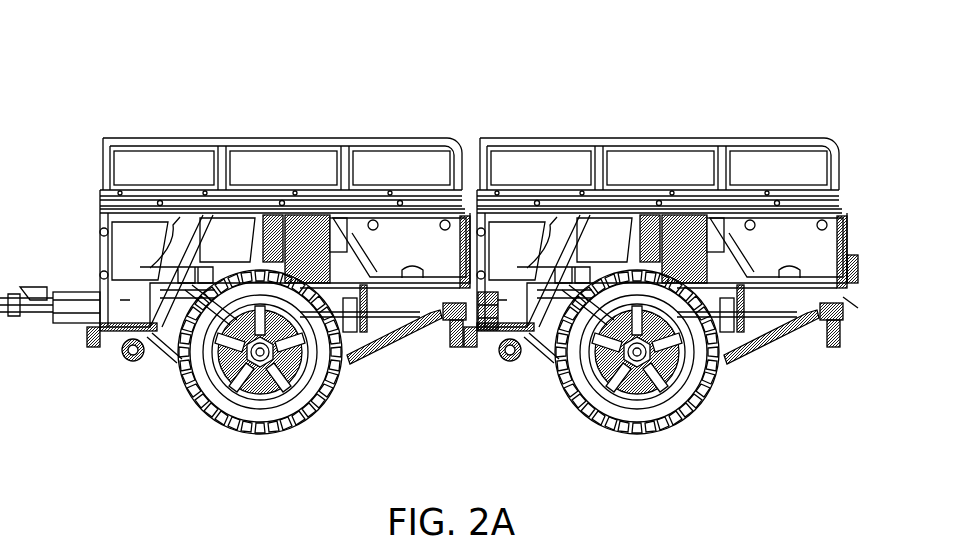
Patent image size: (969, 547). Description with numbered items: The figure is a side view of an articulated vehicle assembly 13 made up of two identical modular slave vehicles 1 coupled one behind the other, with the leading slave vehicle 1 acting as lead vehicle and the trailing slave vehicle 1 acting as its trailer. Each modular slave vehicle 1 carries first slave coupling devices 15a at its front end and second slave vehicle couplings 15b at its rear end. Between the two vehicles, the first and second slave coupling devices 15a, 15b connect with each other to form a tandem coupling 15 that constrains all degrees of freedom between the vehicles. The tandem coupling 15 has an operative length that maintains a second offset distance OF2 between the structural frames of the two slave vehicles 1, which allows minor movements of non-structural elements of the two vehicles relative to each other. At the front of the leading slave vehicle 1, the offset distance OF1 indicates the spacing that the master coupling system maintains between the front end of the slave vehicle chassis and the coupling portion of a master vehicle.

The articulated vehicle assembly 13 is at (120, 60).
The modular slave vehicle 1 is at (268, 105).
The tandem coupling 15 is at (470, 342).
The first slave coupling device 15a is at (100, 260).
The second slave vehicle coupling 15b is at (848, 235).
The offset distance OF1 is at (83, 250).
The second offset distance OF2 is at (481, 121).